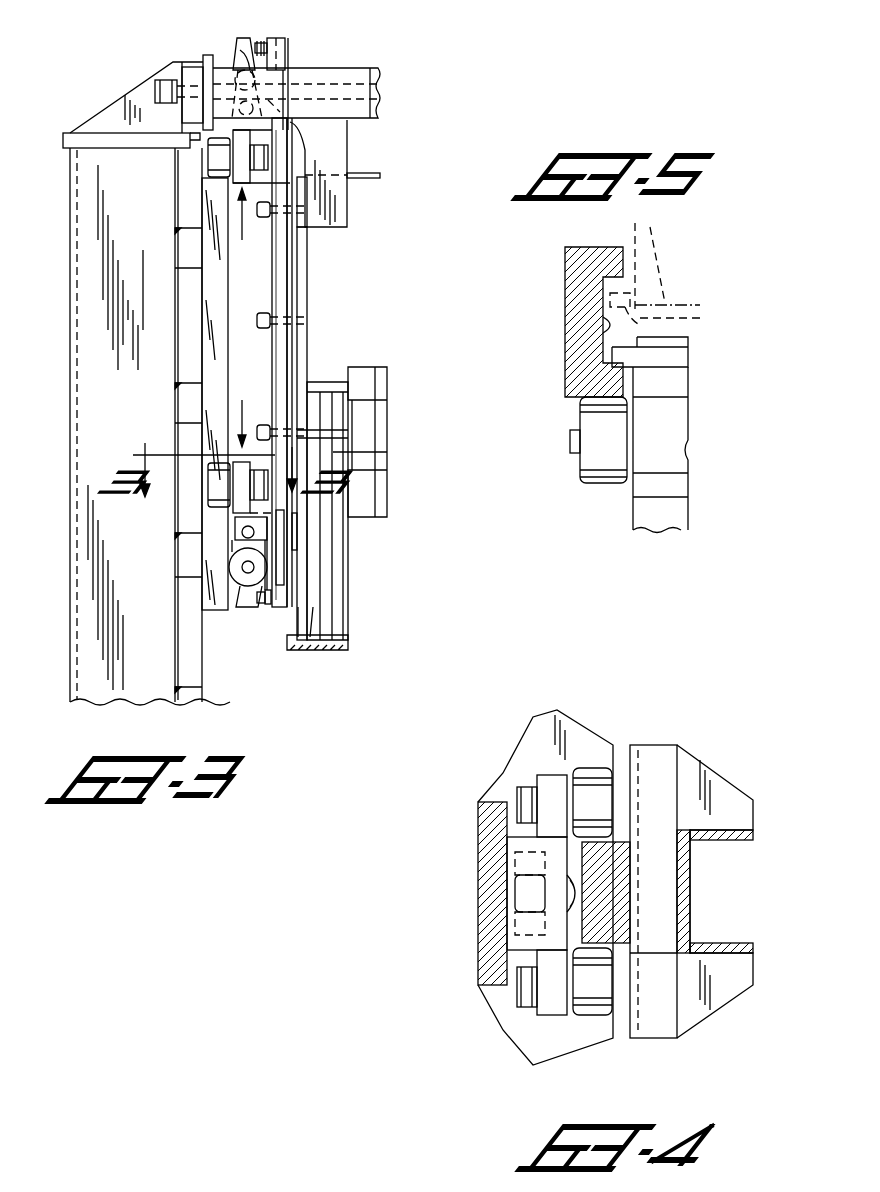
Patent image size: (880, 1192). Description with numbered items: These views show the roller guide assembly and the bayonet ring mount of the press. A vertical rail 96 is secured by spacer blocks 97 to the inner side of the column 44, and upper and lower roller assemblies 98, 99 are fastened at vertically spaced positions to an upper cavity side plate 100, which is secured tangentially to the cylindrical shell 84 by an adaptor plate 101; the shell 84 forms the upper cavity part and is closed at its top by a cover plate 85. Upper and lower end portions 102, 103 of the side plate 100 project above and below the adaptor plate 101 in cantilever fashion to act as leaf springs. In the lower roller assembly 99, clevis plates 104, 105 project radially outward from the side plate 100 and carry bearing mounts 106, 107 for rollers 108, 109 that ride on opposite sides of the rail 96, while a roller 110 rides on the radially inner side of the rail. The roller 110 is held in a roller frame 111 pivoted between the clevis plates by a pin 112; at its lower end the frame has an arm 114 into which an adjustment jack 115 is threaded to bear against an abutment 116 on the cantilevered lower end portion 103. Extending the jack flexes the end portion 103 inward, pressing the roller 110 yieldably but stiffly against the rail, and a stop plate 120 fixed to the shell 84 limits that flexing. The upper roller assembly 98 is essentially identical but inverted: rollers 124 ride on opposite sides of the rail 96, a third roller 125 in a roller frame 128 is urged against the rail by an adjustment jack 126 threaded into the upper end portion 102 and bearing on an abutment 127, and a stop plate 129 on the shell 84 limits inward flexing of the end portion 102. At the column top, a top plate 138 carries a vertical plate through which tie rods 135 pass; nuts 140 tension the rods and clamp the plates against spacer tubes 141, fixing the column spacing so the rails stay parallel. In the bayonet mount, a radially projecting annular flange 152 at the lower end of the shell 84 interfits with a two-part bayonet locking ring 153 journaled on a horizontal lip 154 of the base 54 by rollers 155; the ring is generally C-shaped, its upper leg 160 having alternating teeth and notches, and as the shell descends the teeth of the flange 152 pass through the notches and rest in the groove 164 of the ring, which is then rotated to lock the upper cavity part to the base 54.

In FIG. 3, the frame column 44 is at (70, 368).
In FIG. 4, the frame column 44 is at (745, 795).
In FIG. 5, the base 54 is at (633, 525).
In FIG. 3, the cylindrical shell 84 is at (307, 295).
In FIG. 3, the cover plate 85 is at (380, 175).
In FIG. 3, the vertical rail 96 is at (227, 305).
In FIG. 4, the vertical rail 96 is at (632, 815).
In FIG. 3, the spacer blocks 97 is at (190, 225).
In FIG. 4, the spacer blocks 97 is at (657, 960).
In FIG. 3, the upper roller assembly 98 is at (271, 229).
In FIG. 3, the lower roller assembly 99 is at (271, 412).
In FIG. 3, the upper cavity side plate 100 is at (272, 378).
In FIG. 4, the upper cavity side plate 100 is at (478, 820).
In FIG. 3, the adaptor plate 101 is at (295, 258).
In FIG. 3, the upper end portion 102 is at (300, 125).
In FIG. 3, the lower end portion 103 is at (283, 580).
In FIG. 4, the clevis plate 104 is at (475, 853).
In FIG. 4, the clevis plate 105 is at (510, 920).
In FIG. 4, the bearing mount 106 is at (545, 770).
In FIG. 4, the bearing mount 107 is at (545, 1015).
In FIG. 3, the roller 108 is at (215, 462).
In FIG. 4, the roller 108 is at (595, 768).
In FIG. 4, the roller 109 is at (595, 1015).
In FIG. 3, the roller 110 is at (230, 570).
In FIG. 4, the roller 110 is at (515, 882).
In FIG. 3, the roller frame 111 is at (230, 557).
In FIG. 4, the roller frame 111 is at (600, 905).
In FIG. 3, the pin 112 is at (243, 530).
In FIG. 3, the arm 114 is at (238, 600).
In FIG. 3, the adjustment jack 115 is at (260, 604).
In FIG. 3, the abutment 116 is at (269, 605).
In FIG. 3, the stop plate 120 is at (297, 535).
In FIG. 3, the rollers 124 is at (207, 155).
In FIG. 3, the third roller 125 is at (262, 70).
In FIG. 3, the adjustment jack 126 is at (268, 40).
In FIG. 3, the abutment 127 is at (258, 42).
In FIG. 3, the roller frame 128 is at (236, 45).
In FIG. 3, the stop plate 129 is at (348, 205).
In FIG. 3, the tie rods 135 is at (383, 88).
In FIG. 3, the top plate 138 is at (85, 125).
In FIG. 3, the nuts 140 is at (180, 78).
In FIG. 3, the spacer tubes 141 is at (375, 68).
In FIG. 5, the annular flange 152 is at (655, 315).
In FIG. 5, the bayonet locking ring 153 is at (565, 293).
In FIG. 5, the lip 154 is at (688, 380).
In FIG. 5, the rollers 155 is at (595, 487).
In FIG. 5, the upper leg 160 is at (633, 247).
In FIG. 5, the groove 164 is at (600, 327).